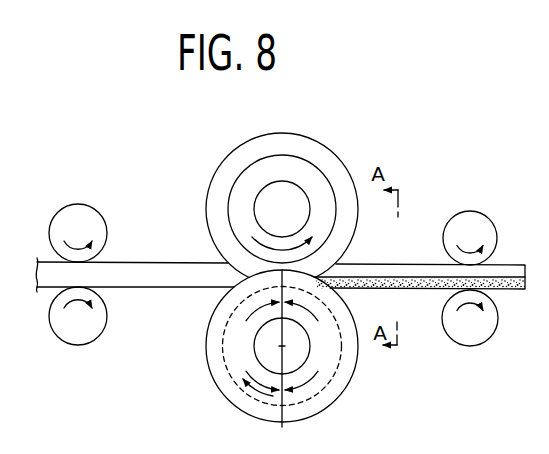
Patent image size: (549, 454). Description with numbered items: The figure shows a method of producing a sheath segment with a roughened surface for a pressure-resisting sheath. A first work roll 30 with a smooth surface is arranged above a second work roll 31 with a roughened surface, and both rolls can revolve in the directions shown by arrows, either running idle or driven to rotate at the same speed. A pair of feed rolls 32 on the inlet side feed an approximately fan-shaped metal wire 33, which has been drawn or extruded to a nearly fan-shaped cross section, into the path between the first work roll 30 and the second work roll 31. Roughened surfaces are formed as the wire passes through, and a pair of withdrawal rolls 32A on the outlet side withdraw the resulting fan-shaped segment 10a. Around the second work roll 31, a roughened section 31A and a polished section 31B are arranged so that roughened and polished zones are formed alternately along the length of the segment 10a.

The first work roll 30 is at (333, 148).
The second work roll 31 is at (230, 411).
The roughened section 31A is at (242, 340).
The polished section 31B is at (318, 342).
The feed rolls 32 is at (102, 226).
The withdrawal rolls 32A is at (480, 217).
The metal wire 33 is at (157, 268).
The fan-shaped segment 10a is at (419, 297).